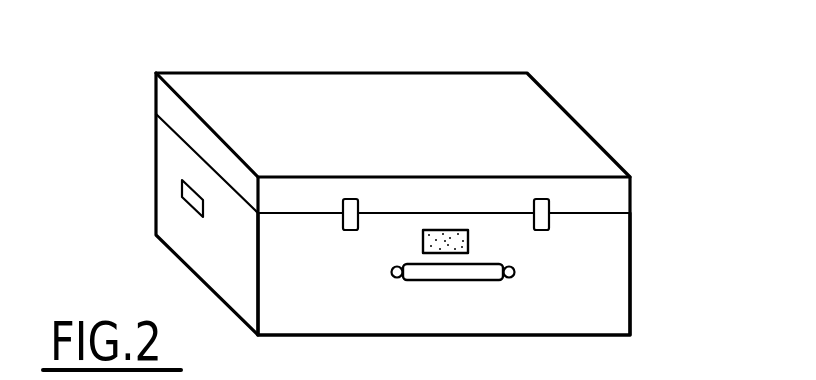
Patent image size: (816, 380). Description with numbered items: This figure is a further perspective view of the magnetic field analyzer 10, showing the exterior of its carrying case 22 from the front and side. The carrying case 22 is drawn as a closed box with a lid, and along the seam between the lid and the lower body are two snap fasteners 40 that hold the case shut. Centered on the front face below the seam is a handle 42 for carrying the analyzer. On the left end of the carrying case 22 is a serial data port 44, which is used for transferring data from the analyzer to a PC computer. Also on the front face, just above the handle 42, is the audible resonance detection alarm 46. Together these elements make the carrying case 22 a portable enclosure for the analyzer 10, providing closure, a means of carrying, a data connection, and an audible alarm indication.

The magnetic field analyzer 10 is at (590, 107).
The carrying case 22 is at (607, 247).
The snap fasteners 40 is at (578, 201).
The handle 42 is at (542, 277).
The RS-232 port 44 is at (168, 214).
The audible resonance detection alarm 46 is at (423, 241).